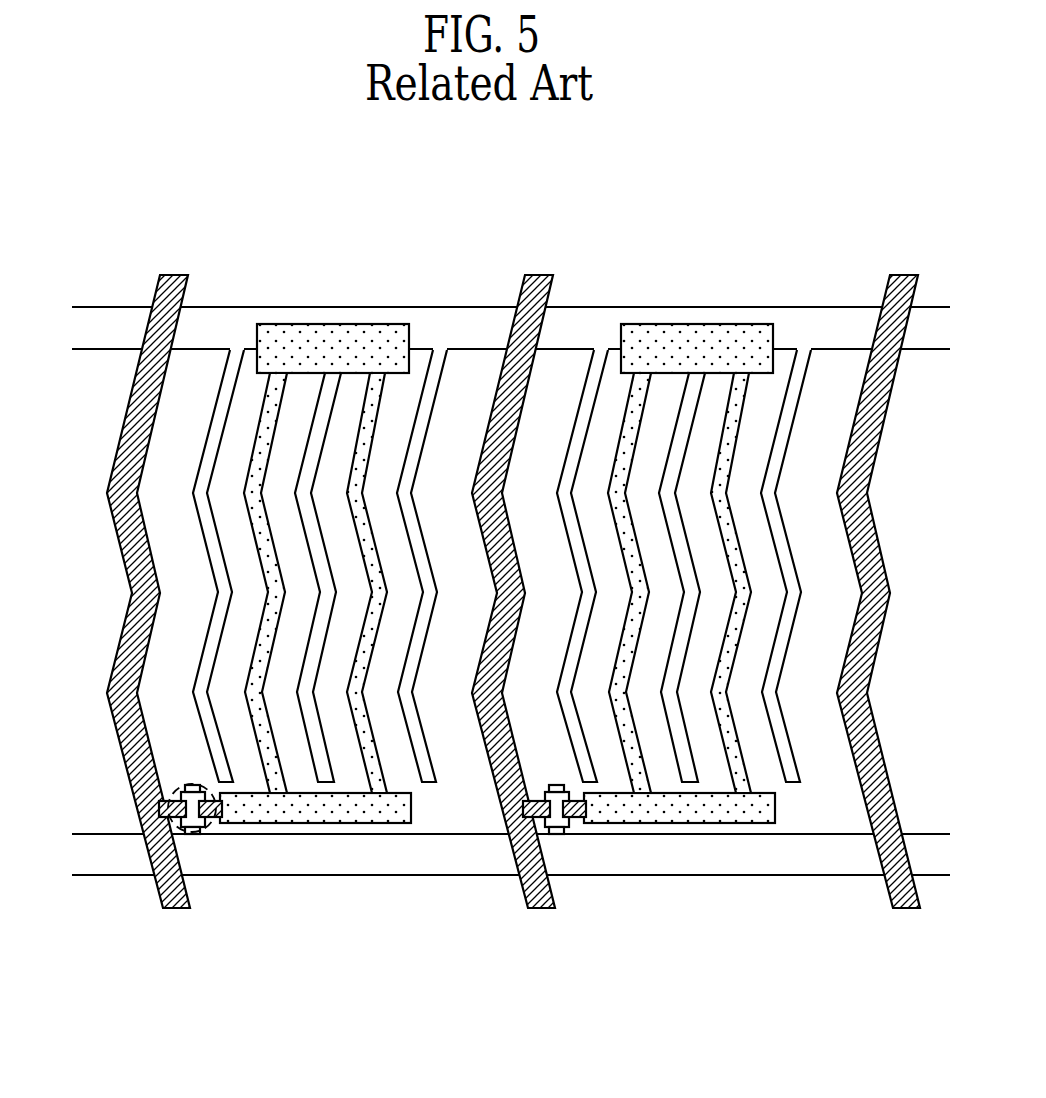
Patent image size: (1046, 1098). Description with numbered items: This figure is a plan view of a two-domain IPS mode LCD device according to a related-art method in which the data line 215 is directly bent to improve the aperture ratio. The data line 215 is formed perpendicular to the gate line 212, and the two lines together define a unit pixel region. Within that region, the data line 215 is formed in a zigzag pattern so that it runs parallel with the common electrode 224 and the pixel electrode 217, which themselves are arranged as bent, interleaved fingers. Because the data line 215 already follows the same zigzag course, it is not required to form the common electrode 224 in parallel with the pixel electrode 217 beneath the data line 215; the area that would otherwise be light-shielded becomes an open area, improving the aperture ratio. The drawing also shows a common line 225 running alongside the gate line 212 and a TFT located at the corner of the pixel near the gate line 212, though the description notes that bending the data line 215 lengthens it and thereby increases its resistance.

The data line 215 is at (135, 421).
The pixel electrode 217 is at (258, 471).
The common electrode 224 is at (203, 506).
The common line 225 is at (449, 317).
The gate line 212 is at (406, 861).
The thin film transistor TFT is at (165, 802).